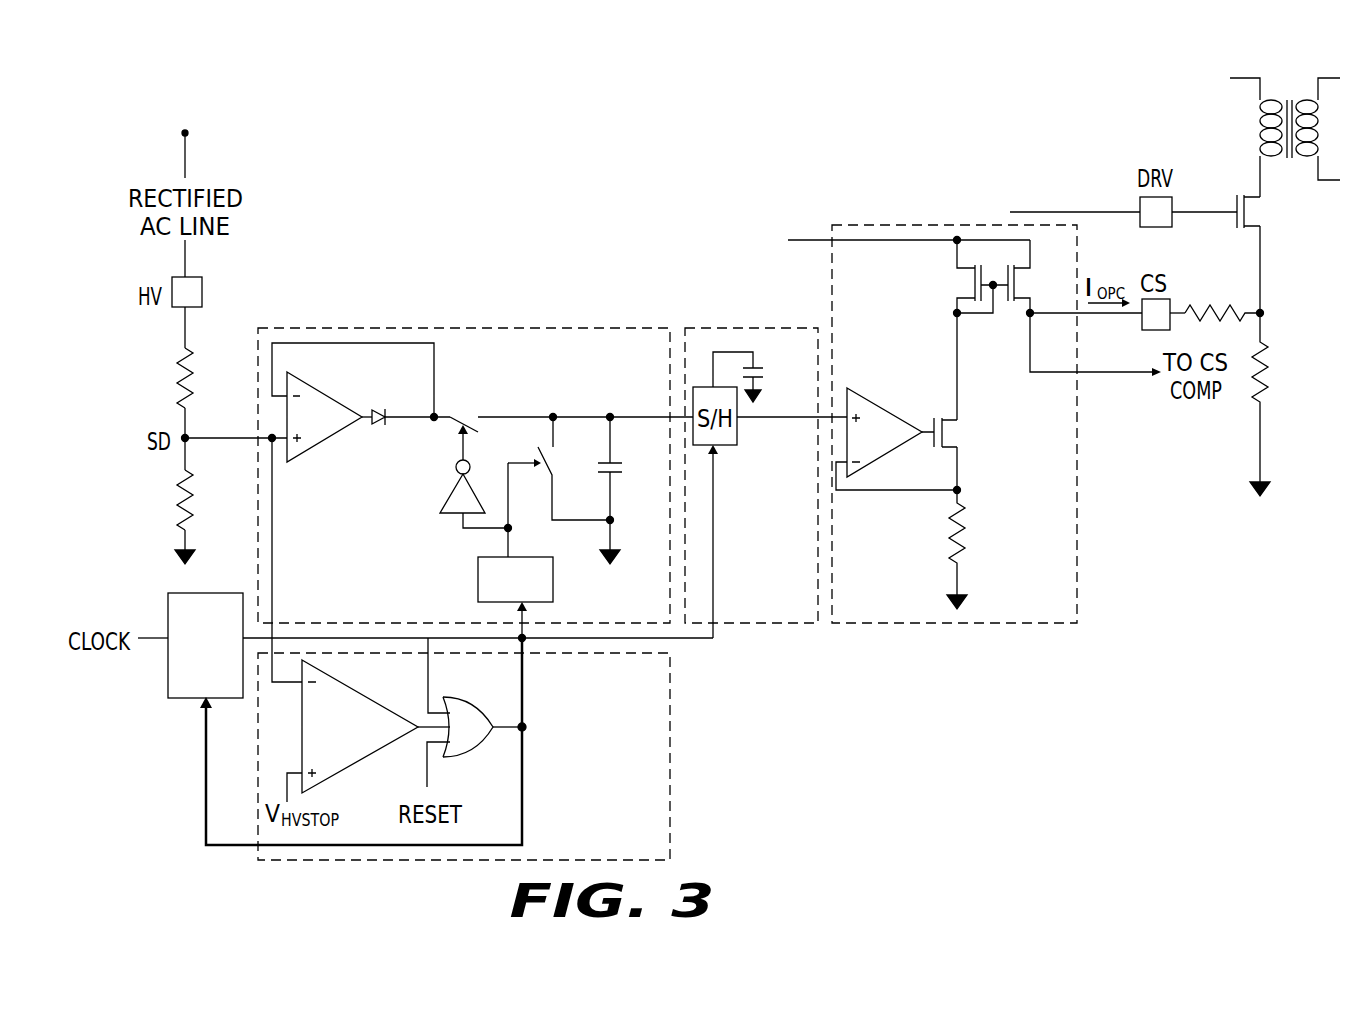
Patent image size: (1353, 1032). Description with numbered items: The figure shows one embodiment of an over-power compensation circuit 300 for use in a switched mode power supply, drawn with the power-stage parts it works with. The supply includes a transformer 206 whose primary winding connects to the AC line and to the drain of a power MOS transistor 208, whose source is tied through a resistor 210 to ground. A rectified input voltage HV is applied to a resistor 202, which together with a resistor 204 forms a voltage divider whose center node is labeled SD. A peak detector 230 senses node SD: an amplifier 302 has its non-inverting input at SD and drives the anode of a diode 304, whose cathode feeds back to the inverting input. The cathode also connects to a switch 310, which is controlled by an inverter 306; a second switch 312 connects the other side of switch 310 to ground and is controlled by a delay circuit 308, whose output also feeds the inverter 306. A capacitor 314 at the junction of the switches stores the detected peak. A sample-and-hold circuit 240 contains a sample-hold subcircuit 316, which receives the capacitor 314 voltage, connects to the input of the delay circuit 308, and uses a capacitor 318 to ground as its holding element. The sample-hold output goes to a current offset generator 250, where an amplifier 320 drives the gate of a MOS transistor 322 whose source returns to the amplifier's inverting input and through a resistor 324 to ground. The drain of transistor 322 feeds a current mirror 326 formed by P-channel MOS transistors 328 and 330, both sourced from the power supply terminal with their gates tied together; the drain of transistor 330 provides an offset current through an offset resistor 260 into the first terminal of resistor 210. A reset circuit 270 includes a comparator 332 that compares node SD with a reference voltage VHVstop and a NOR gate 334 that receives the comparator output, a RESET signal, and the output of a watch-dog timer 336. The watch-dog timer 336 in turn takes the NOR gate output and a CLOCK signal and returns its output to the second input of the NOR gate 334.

The over-power compensation circuit 300 is at (343, 128).
The resistor 202 is at (185, 366).
The resistor 204 is at (185, 504).
The transformer 206 is at (1275, 70).
The power MOS transistor 208 is at (1275, 212).
The resistor 210 is at (1264, 380).
The peak detector 230 is at (300, 328).
The sample-and-hold circuit 240 is at (728, 328).
The current offset generator 250 is at (872, 225).
The offset resistor 260 is at (1196, 308).
The reset circuit 270 is at (692, 700).
The amplifier 302 is at (302, 386).
The diode 304 is at (376, 408).
The inverter 306 is at (450, 506).
The delay circuit 308 is at (478, 573).
The switch 310 is at (468, 404).
The switch 312 is at (549, 462).
The capacitor 314 is at (613, 465).
The sample-hold subcircuit 316 is at (722, 445).
The capacitor 318 is at (754, 372).
The amplifier 320 is at (860, 402).
The MOS transistor 322 is at (970, 432).
The resistor 324 is at (985, 530).
The current mirror 326 is at (1002, 360).
The P-channel MOS transistor 328 is at (958, 286).
The P-channel MOS transistor 330 is at (1032, 286).
The comparator 332 is at (359, 696).
The NOR gate 334 is at (446, 697).
The watch-dog timer 336 is at (206, 593).